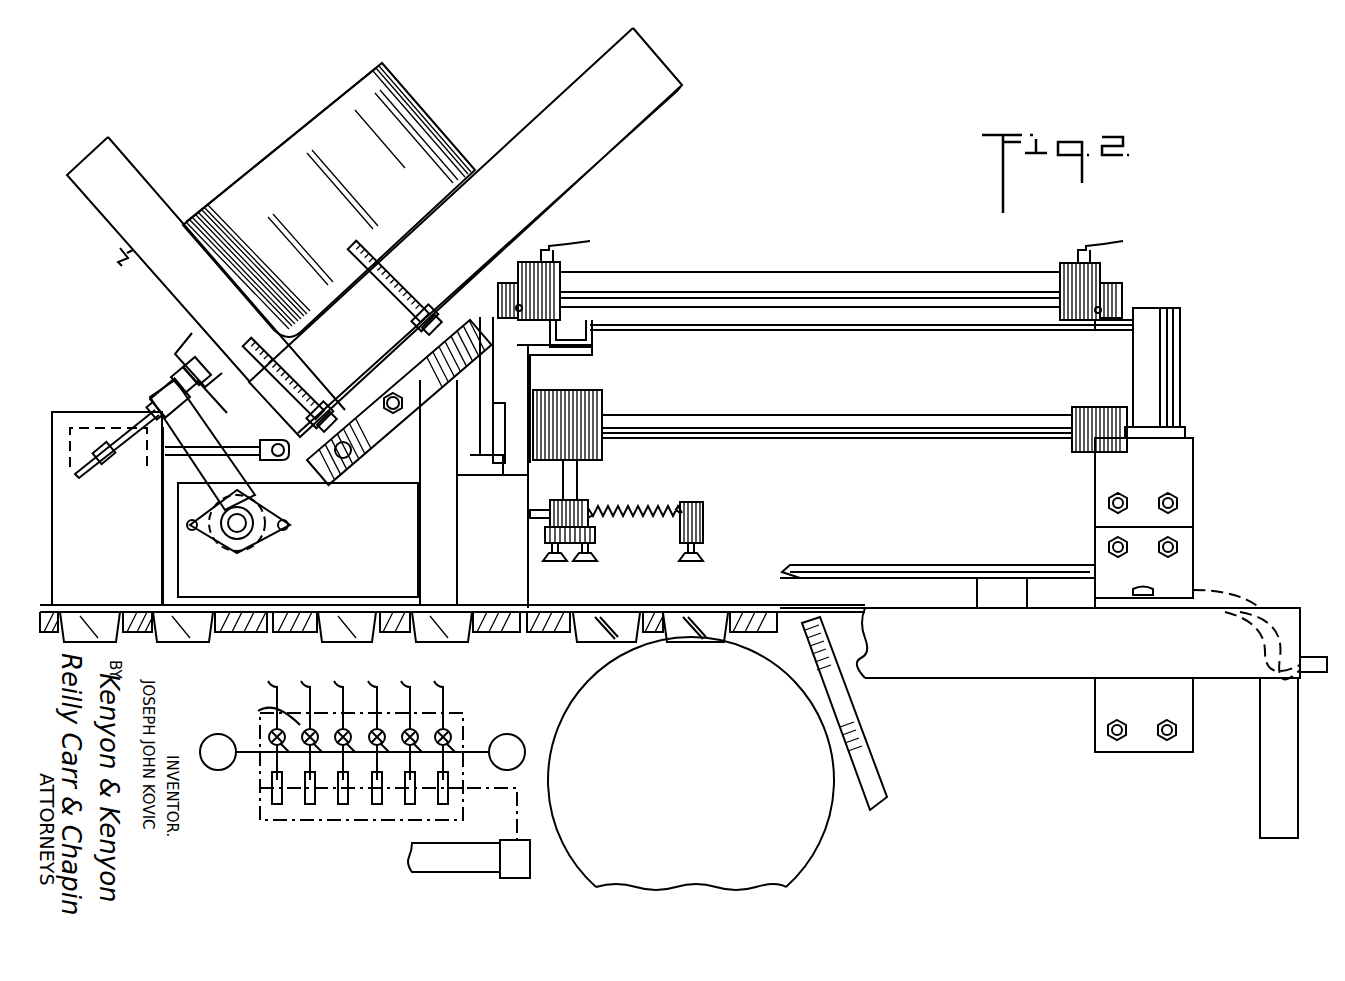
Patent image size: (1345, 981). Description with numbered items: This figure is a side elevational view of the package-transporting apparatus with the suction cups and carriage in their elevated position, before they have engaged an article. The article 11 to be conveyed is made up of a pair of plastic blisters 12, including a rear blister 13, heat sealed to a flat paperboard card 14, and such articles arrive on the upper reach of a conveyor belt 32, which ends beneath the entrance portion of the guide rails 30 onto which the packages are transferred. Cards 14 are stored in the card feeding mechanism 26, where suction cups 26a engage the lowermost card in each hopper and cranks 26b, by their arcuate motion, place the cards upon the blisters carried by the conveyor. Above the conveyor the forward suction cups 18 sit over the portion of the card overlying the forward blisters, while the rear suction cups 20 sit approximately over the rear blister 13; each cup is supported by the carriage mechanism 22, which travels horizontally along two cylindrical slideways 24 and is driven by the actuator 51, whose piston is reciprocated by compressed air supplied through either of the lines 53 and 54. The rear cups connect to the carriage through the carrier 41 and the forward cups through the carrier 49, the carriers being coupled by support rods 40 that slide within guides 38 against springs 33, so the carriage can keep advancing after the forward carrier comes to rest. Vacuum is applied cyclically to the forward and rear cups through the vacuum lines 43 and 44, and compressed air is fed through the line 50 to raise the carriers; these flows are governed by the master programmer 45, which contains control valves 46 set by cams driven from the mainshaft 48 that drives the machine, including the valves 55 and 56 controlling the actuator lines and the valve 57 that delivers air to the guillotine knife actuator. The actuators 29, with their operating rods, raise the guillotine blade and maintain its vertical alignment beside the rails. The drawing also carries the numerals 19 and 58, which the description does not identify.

The article 11 is at (552, 648).
The plastic blisters 12 is at (703, 618).
The rear blister 13 is at (612, 618).
The card 14 is at (323, 98).
The forward suction cups 18 is at (700, 558).
The suction cup 19 is at (547, 547).
The rear suction cups 20 is at (597, 555).
The carriage mechanism 22 is at (608, 395).
The cylindrical slideways 24 is at (853, 425).
The card feeding mechanism 26 is at (582, 188).
The suction cups 26a is at (192, 333).
The cranks 26b is at (197, 436).
The actuators 29 is at (1173, 308).
The guide rails 30 is at (950, 575).
The conveyor belt 32 is at (870, 759).
The springs 33 is at (632, 512).
The guides 38 is at (572, 508).
The support rods 40 is at (670, 510).
The carrier 41 is at (595, 535).
The vacuum line 43 is at (257, 670).
The vacuum line 44 is at (299, 670).
The master programmer 45 is at (330, 823).
The control valves 46 is at (270, 730).
The mainshaft 48 is at (480, 863).
The carrier 49 is at (697, 532).
The line 50 is at (365, 670).
The actuator 51 is at (863, 280).
The line 53 is at (400, 670).
The line 54 is at (434, 670).
The valve 55 is at (417, 732).
The valve 56 is at (450, 735).
The valve 57 is at (347, 742).
The valve 58 is at (332, 670).